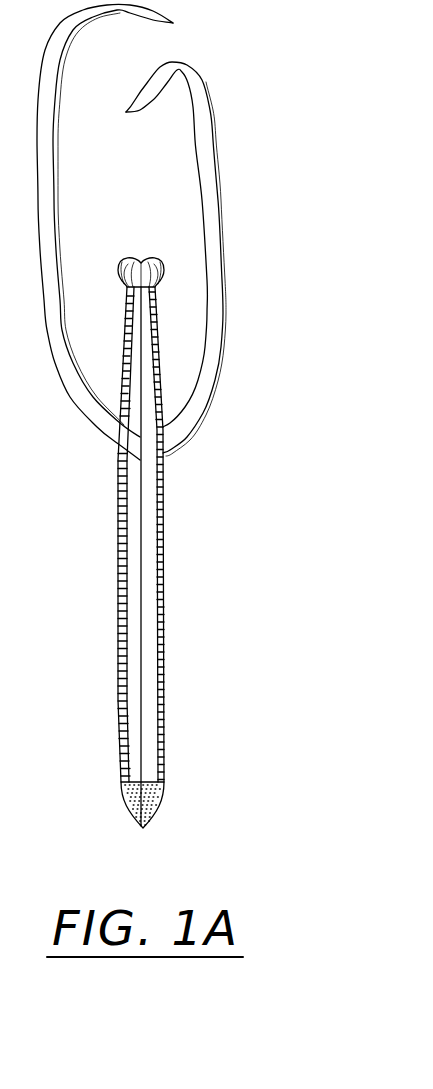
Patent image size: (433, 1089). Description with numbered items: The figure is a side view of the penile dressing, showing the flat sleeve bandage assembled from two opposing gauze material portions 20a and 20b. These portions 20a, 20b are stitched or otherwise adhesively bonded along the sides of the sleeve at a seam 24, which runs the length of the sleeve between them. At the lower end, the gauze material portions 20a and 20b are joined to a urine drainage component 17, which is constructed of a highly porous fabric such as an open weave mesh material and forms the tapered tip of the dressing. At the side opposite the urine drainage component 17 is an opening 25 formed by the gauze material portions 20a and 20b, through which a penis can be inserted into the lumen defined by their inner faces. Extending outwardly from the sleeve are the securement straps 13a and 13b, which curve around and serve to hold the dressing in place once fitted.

The securement strap 13a is at (50, 300).
The securement strap 13b is at (208, 203).
The opening 25 is at (138, 265).
The gauze material portion 20a is at (118, 547).
The gauze material portion 20b is at (158, 552).
The seam 24 is at (142, 643).
The urine drainage component 17 is at (132, 790).